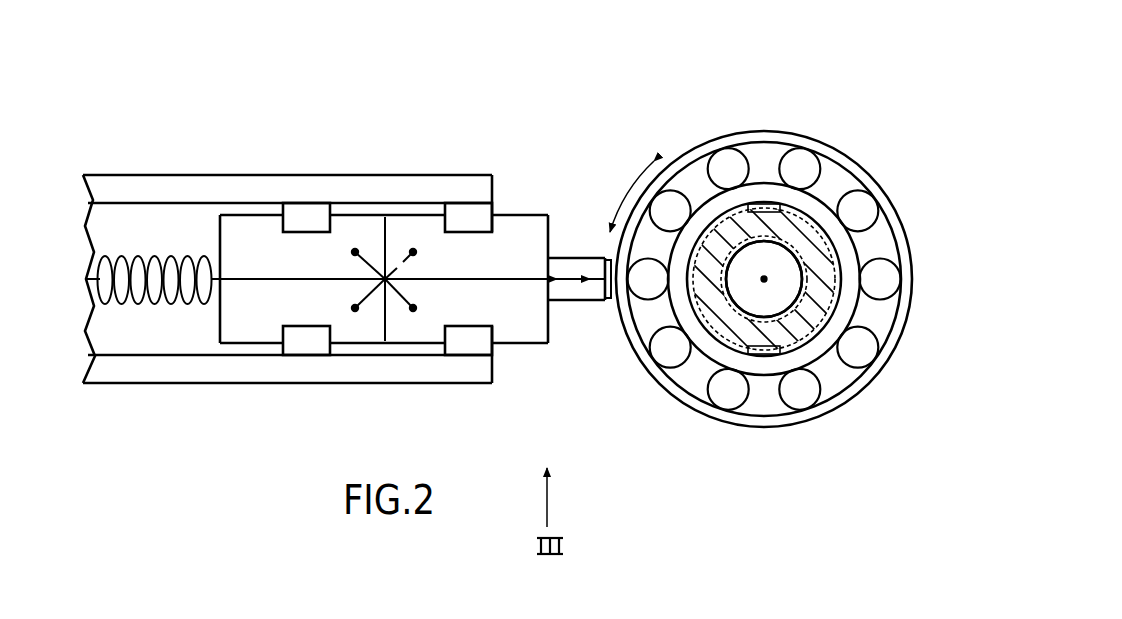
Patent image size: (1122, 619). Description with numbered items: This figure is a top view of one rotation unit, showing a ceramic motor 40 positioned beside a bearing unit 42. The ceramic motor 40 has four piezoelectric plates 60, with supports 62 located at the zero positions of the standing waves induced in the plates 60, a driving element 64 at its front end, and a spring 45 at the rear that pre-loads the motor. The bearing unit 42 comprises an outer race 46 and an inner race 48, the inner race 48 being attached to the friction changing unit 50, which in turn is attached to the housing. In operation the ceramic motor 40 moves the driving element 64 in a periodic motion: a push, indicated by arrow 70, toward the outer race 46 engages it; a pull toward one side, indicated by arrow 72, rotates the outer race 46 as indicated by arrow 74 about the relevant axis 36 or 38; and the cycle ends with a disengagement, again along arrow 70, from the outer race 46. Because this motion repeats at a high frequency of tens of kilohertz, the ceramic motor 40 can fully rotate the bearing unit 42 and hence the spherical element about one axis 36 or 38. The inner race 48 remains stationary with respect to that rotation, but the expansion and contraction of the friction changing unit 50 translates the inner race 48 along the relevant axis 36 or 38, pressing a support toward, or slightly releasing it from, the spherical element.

The ceramic motor 40 is at (225, 150).
The bearing unit 42 is at (808, 105).
The spring 45 is at (167, 305).
The outer race 46 is at (862, 175).
The inner race 48 is at (850, 258).
The friction changing unit 50 is at (807, 342).
The axis 36 is at (764, 283).
The axis 38 is at (764, 283).
The piezoelectric plates 60 is at (521, 218).
The supports 62 is at (470, 218).
The driving element 64 is at (573, 303).
The push arrow 70 is at (574, 266).
The pull arrow 72 is at (622, 320).
The rotation arrow 74 is at (637, 177).